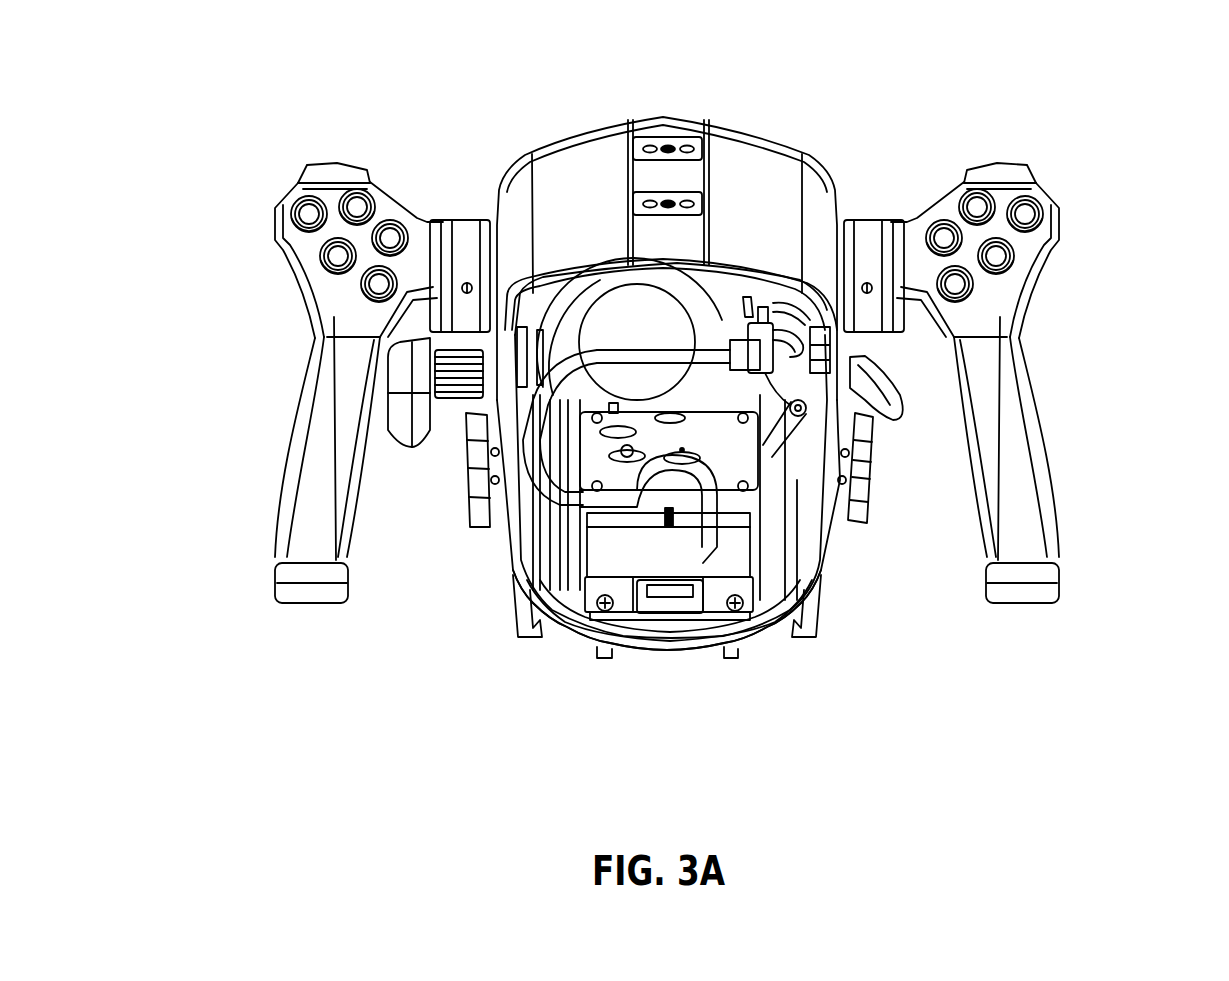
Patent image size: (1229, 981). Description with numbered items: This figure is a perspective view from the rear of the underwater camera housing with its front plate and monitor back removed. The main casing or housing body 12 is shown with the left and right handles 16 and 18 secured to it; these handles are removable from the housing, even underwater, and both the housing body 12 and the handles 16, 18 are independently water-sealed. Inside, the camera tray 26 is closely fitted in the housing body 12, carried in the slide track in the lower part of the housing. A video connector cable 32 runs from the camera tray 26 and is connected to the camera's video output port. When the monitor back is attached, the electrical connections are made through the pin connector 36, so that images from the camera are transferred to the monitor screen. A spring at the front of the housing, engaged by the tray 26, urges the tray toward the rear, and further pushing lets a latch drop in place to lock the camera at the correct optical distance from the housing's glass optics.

The housing body 12 is at (755, 168).
The left handle 16 is at (308, 366).
The right handle 18 is at (1009, 385).
The camera tray 26 is at (663, 546).
The video connector cable 32 is at (710, 502).
The pin connector 36 is at (597, 633).